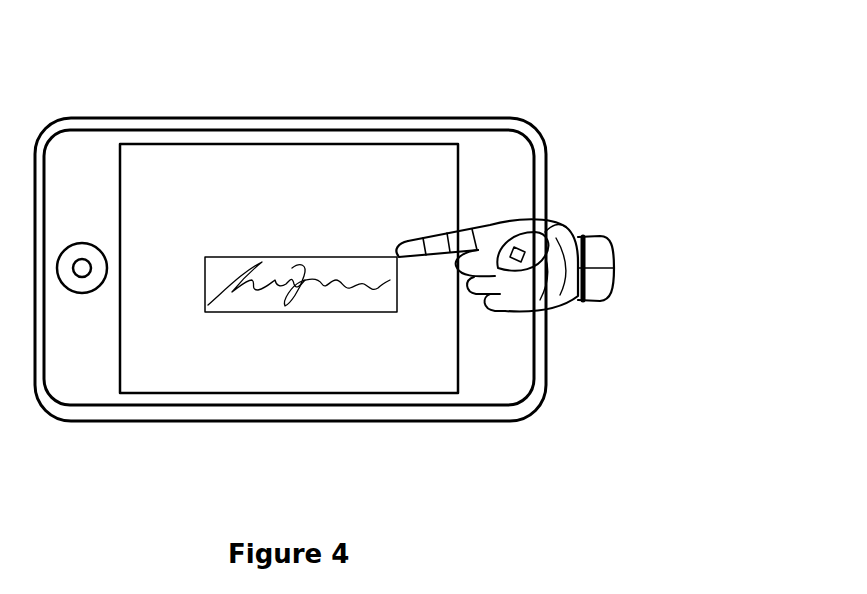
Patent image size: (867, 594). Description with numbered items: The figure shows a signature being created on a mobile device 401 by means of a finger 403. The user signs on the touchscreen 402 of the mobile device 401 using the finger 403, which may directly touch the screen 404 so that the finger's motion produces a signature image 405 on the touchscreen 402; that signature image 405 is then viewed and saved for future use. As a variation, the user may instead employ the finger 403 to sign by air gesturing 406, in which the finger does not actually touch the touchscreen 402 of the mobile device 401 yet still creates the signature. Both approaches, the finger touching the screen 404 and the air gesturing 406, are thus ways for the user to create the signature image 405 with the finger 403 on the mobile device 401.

The mobile device 401 is at (236, 112).
The touchscreen 402 is at (258, 172).
The finger 403 is at (454, 224).
The finger touching the screen 404 is at (718, 145).
The signature image 405 is at (313, 256).
The air gesturing 406 is at (728, 318).